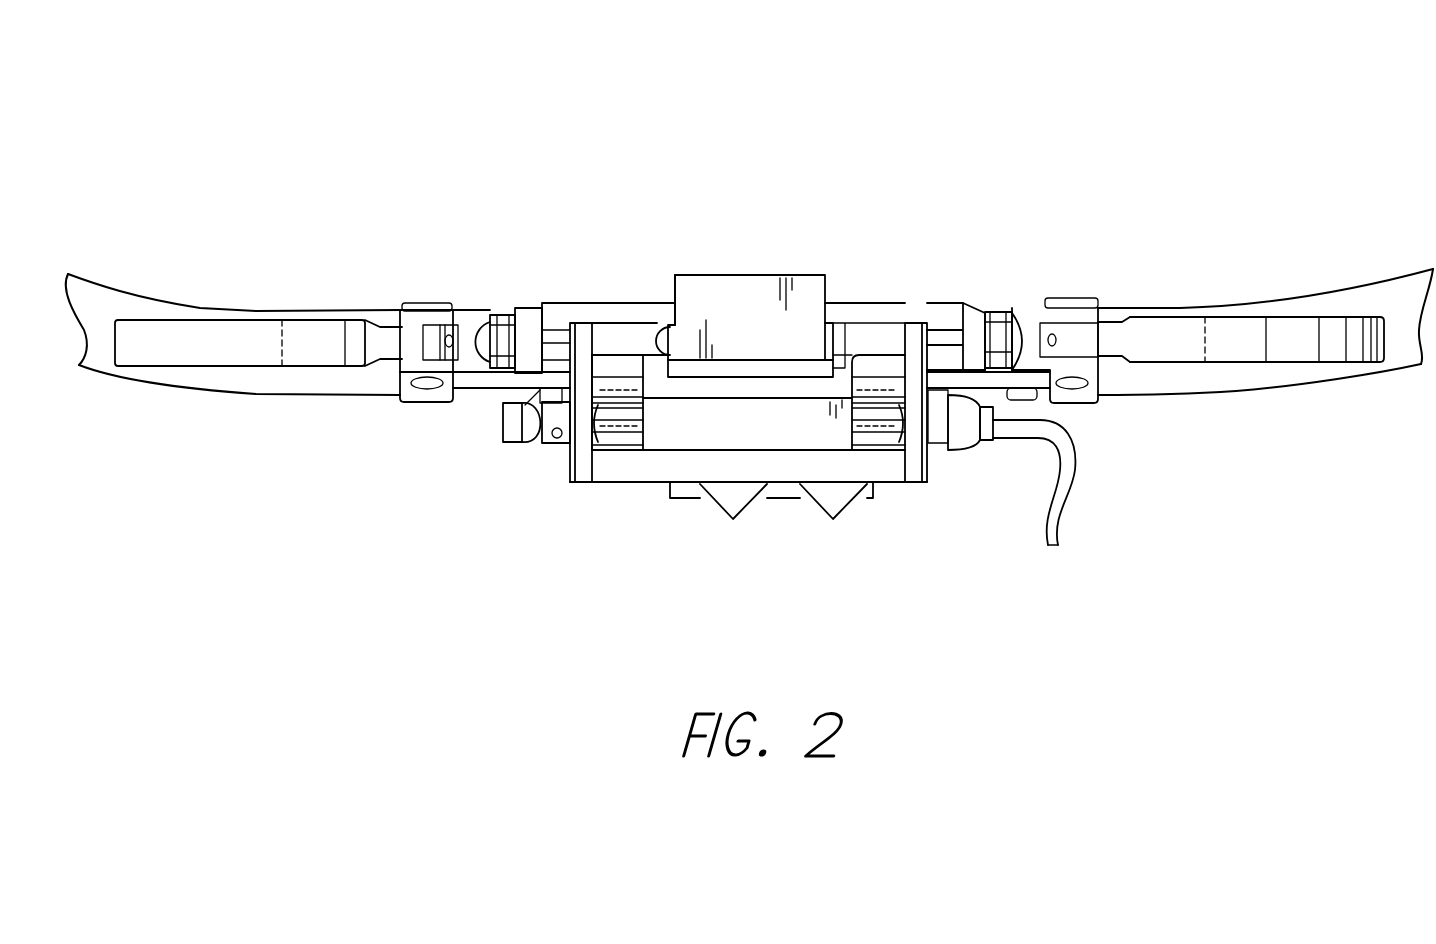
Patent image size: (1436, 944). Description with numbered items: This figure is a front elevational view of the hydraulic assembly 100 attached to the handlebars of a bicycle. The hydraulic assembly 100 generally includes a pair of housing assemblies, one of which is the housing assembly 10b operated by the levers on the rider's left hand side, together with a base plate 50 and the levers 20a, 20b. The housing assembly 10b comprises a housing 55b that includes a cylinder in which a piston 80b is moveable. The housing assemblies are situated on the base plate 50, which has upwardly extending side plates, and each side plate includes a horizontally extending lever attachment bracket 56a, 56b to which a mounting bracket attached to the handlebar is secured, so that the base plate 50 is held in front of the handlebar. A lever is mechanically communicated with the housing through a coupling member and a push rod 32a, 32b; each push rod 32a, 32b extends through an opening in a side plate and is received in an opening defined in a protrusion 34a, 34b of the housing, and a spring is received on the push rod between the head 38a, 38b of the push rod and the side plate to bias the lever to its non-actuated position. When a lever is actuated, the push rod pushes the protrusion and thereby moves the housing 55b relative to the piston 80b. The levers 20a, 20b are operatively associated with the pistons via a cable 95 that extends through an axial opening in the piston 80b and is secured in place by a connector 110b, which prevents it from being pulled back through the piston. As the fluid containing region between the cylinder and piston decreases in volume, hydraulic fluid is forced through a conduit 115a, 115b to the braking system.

The hydraulic assembly 100 is at (788, 163).
The lever 20a is at (223, 332).
The lever 20b is at (1240, 330).
The head of push rod 38a is at (500, 328).
The head of push rod 38b is at (1000, 328).
The push rod 32a is at (530, 335).
The push rod 32b is at (950, 342).
The protrusion 34a is at (612, 342).
The protrusion 34b is at (877, 338).
The lever attachment bracket 56a is at (463, 377).
The lever attachment bracket 56b is at (1038, 378).
The connector 110b is at (547, 424).
The housing 55b is at (677, 420).
The piston 80b is at (607, 430).
The conduit 115a is at (732, 512).
The conduit 115b is at (840, 494).
The base plate 50 is at (778, 470).
The cable 95 is at (1018, 440).
The housing assembly 10b is at (527, 511).